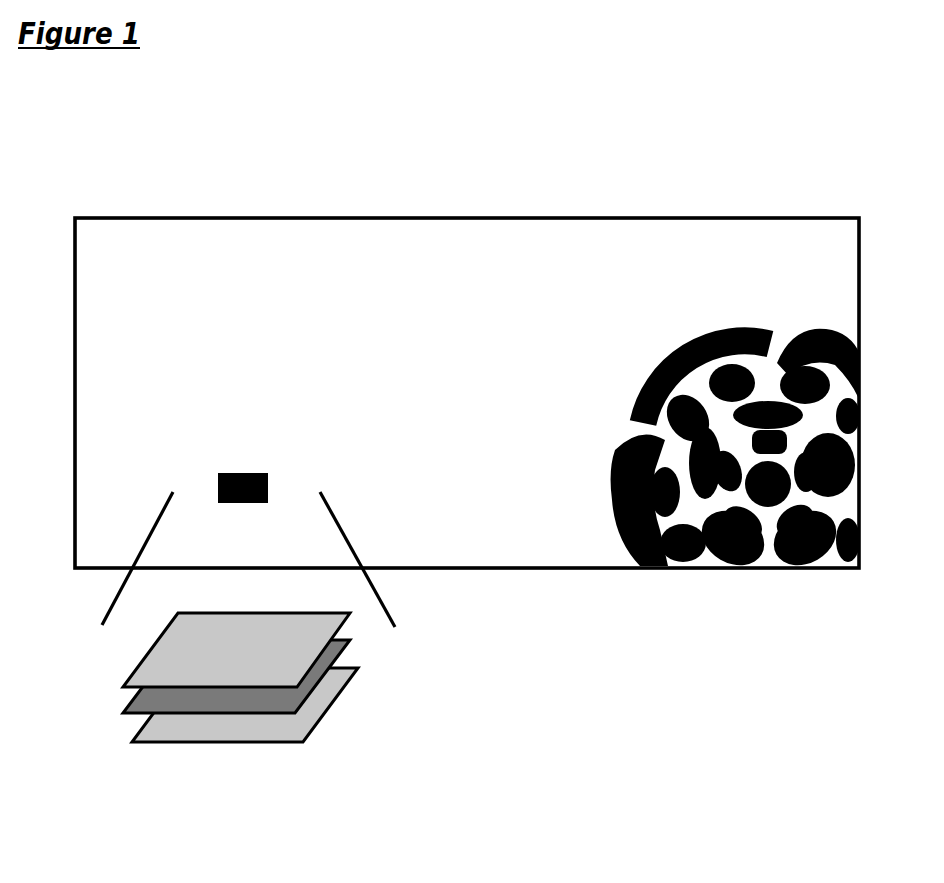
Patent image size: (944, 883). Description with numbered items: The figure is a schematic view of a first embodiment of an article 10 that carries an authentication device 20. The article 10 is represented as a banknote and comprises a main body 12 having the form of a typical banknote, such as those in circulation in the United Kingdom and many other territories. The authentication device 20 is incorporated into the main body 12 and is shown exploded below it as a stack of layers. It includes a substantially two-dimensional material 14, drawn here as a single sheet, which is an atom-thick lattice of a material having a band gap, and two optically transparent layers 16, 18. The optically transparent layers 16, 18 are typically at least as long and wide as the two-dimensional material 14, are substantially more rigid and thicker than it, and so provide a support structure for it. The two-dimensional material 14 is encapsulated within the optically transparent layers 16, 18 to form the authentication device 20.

The article 10 is at (152, 200).
The main body 12 is at (622, 272).
The substantially two-dimensional material 14 is at (258, 702).
The optically transparent layer 16 is at (305, 741).
The optically transparent layer 18 is at (333, 654).
The authentication device 20 is at (102, 655).